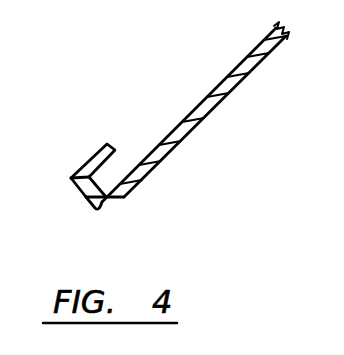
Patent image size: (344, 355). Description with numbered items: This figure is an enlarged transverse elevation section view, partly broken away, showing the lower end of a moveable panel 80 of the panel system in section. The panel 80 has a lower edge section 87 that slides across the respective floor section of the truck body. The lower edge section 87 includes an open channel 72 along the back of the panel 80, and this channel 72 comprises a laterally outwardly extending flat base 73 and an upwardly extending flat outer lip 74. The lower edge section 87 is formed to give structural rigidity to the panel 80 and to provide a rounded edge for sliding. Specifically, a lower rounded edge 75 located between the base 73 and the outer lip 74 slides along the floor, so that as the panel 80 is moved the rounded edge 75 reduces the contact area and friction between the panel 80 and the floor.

The open channel 72 is at (118, 162).
The flat base 73 is at (78, 196).
The flat outer lip 74 is at (83, 163).
The lower rounded edge 75 is at (100, 211).
The moveable panel 80 is at (242, 60).
The lower edge section 87 is at (89, 110).